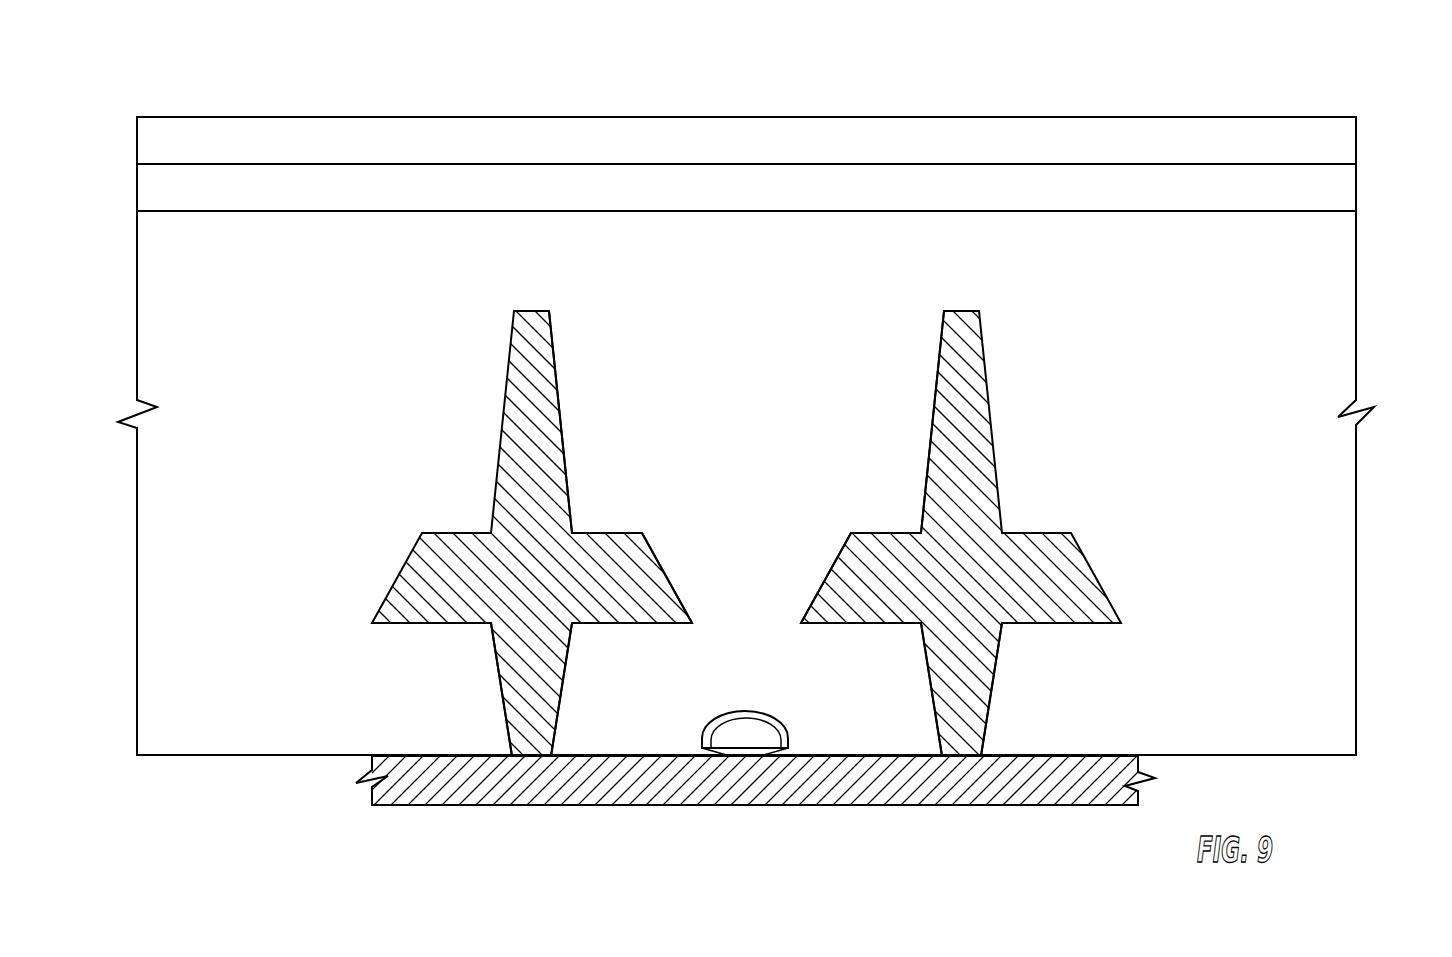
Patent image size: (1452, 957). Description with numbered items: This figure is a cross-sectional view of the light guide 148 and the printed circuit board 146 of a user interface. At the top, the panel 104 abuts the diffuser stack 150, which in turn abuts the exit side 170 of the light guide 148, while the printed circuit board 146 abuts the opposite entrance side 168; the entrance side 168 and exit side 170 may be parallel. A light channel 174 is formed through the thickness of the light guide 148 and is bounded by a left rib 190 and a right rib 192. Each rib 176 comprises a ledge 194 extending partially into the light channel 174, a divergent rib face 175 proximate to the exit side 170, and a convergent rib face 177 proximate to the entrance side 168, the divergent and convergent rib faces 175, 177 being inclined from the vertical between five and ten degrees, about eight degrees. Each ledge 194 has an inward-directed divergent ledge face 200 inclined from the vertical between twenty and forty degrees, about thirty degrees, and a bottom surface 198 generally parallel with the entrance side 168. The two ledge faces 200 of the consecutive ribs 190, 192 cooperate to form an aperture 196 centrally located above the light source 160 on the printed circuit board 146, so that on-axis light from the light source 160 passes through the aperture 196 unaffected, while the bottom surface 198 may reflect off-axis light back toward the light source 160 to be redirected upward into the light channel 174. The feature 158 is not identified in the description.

The panel 104 is at (1358, 140).
The printed circuit board 146 is at (1047, 787).
The light guide 148 is at (1410, 326).
The diffuser stack 150 is at (137, 197).
The substrate top surface 158 is at (422, 756).
The light source 160 is at (790, 740).
The entrance side 168 is at (268, 756).
The exit side 170 is at (1313, 211).
The light channel 174 is at (754, 373).
The divergent rib face 175 is at (557, 373).
The rib 176 is at (515, 653).
The convergent rib face 177 is at (562, 692).
The left rib 190 is at (528, 310).
The right rib 192 is at (963, 310).
The ledge 194 is at (590, 562).
The aperture 196 is at (747, 540).
The bottom surface 198 is at (627, 623).
The ledge face 200 is at (657, 557).